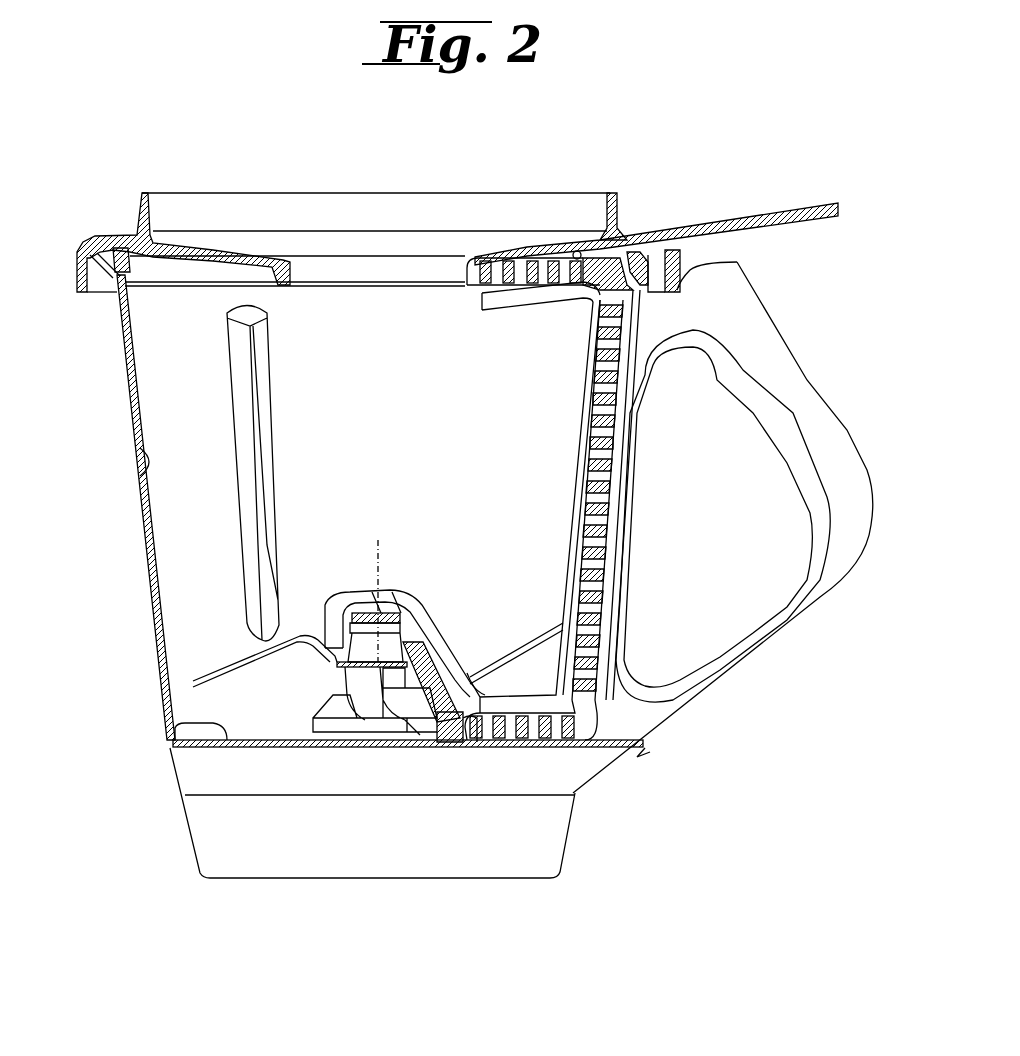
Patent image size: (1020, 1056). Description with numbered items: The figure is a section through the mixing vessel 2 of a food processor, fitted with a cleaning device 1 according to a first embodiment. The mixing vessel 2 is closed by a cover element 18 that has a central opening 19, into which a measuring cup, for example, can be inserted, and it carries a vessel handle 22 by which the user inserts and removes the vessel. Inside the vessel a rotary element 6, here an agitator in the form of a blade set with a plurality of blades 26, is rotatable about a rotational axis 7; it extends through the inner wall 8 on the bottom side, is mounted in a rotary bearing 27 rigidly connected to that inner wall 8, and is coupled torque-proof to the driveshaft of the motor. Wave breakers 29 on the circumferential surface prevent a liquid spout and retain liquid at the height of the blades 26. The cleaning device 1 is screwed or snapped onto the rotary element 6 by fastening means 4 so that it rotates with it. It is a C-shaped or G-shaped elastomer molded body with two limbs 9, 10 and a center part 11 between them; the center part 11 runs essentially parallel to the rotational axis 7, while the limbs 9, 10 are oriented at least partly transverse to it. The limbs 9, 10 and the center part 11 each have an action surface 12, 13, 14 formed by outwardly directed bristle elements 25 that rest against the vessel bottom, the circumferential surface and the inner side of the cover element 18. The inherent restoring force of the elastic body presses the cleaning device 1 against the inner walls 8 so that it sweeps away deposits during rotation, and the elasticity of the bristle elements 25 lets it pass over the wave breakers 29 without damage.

The cleaning device 1 is at (575, 468).
The mixing vessel 2 is at (657, 137).
The fastening means 4 is at (367, 600).
The rotary element 6 is at (400, 608).
The rotational axis 7 is at (385, 578).
The inner wall 8 is at (560, 253).
The limb 9 is at (527, 302).
The limb 10 is at (523, 707).
The center part 11 is at (577, 487).
The action surface 12 is at (547, 250).
The action surface 13 is at (620, 403).
The action surface 14 is at (520, 705).
The cover element 18 is at (220, 253).
The central opening 19 is at (345, 280).
The vessel handle 22 is at (773, 358).
The bristle elements 25 is at (513, 260).
The blades 26 is at (375, 705).
The rotary bearing 27 is at (415, 705).
The wave breakers 29 is at (237, 365).